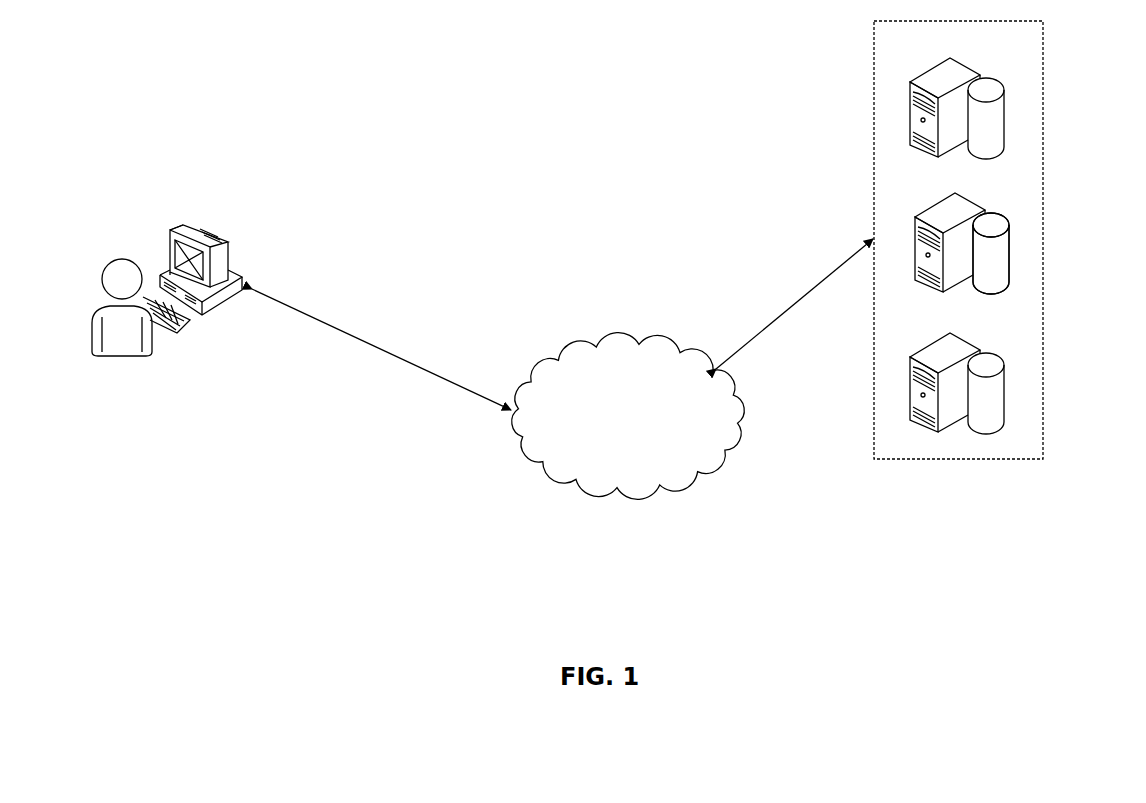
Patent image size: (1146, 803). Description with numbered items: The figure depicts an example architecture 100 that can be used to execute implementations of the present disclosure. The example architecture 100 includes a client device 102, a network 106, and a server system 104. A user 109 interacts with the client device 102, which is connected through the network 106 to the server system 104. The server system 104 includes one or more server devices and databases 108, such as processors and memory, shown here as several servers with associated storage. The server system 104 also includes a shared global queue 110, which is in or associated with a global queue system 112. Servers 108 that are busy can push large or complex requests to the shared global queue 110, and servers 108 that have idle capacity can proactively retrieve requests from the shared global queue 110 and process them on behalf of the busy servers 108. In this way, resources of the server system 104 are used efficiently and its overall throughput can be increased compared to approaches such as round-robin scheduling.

The example architecture 100 is at (476, 98).
The client device 102 is at (170, 235).
The server system 104 is at (1043, 240).
The network 106 is at (628, 344).
The server devices and databases 108 is at (910, 106).
The user 109 is at (122, 355).
The shared global queue 110 is at (1008, 262).
The global queue system 112 is at (915, 240).